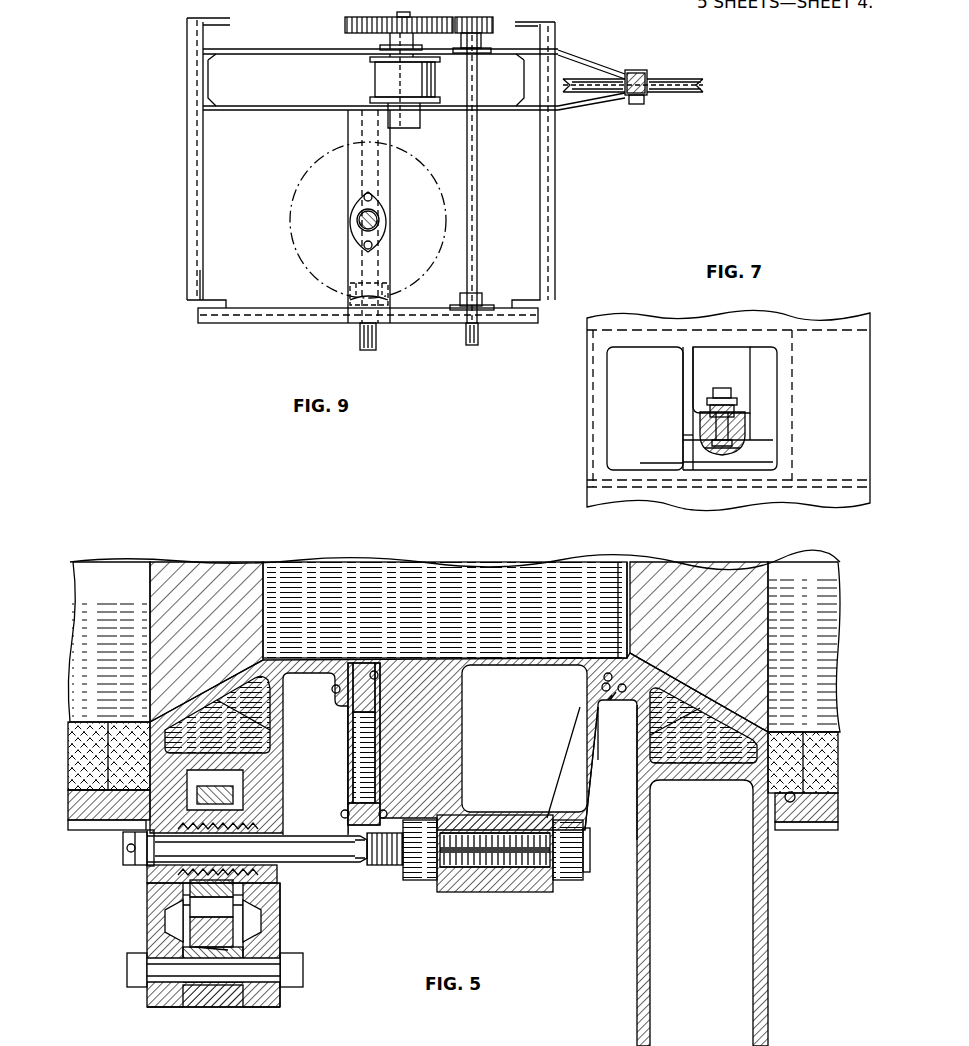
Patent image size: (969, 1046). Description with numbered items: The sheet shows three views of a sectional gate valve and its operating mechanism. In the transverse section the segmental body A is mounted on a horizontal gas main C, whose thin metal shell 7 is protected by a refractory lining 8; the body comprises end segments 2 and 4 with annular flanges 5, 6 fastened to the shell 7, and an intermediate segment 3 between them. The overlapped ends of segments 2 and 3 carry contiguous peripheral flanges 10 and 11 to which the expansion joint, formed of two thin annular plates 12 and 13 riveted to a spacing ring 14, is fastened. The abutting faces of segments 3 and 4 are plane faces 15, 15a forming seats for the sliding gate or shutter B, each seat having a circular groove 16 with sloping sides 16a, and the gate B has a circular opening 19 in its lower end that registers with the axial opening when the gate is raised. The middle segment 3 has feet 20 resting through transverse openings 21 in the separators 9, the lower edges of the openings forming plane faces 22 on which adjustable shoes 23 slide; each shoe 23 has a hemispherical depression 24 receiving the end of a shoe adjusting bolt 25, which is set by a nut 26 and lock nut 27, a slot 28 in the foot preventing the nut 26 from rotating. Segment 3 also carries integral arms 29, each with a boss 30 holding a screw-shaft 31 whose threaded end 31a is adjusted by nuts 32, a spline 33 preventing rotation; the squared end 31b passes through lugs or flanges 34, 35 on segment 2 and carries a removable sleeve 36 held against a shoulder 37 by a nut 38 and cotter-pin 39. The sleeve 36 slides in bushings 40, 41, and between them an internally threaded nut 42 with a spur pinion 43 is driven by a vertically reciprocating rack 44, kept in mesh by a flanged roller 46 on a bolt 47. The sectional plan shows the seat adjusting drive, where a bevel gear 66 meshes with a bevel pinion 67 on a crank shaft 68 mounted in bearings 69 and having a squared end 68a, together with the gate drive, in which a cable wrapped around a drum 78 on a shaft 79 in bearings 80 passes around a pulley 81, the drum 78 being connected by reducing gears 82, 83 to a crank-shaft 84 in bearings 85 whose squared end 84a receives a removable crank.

In FIG. 5, the end segment 2 is at (283, 730).
In FIG. 5, the intermediate segment 3 is at (503, 738).
In FIG. 5, the end segment 4 is at (638, 760).
In FIG. 5, the annular flange 5 is at (110, 812).
In FIG. 5, the annular flange 6 is at (805, 830).
In FIG. 5, the metal shell 7 is at (78, 828).
In FIG. 5, the refractory lining 8 is at (80, 745).
In FIG. 7, the separator 9 is at (583, 408).
In FIG. 5, the peripheral flange 10 is at (334, 697).
In FIG. 5, the peripheral flange 11 is at (382, 694).
In FIG. 5, the annular metal plate 12 is at (348, 766).
In FIG. 5, the annular metal plate 13 is at (380, 758).
In FIG. 5, the spacing ring 14 is at (385, 812).
In FIG. 5, the plane face 15 is at (605, 720).
In FIG. 5, the plane face 15a is at (634, 722).
In FIG. 5, the circular groove 16 is at (600, 690).
In FIG. 5, the sloping side 16a is at (603, 680).
In FIG. 5, the circular opening 19 is at (619, 562).
In FIG. 7, the foot 20 is at (690, 376).
In FIG. 7, the transverse opening 21 is at (615, 427).
In FIG. 7, the plane face 22 is at (652, 462).
In FIG. 7, the adjustable shoe 23 is at (683, 440).
In FIG. 7, the hemispherical depression 24 is at (712, 450).
In FIG. 7, the shoe adjusting bolt 25 is at (733, 387).
In FIG. 7, the nut 26 is at (745, 430).
In FIG. 7, the lock nut 27 is at (735, 408).
In FIG. 7, the slot 28 is at (745, 437).
In FIG. 5, the integral arm 29 is at (570, 785).
In FIG. 5, the boss 30 is at (528, 882).
In FIG. 5, the screw-shaft 31 is at (335, 835).
In FIG. 5, the screw threaded end 31a is at (545, 885).
In FIG. 5, the squared end 31b is at (200, 830).
In FIG. 5, the nut 32 is at (427, 882).
In FIG. 5, the spline 33 is at (497, 850).
In FIG. 5, the lug or flange 34 is at (280, 890).
In FIG. 5, the lug or flange 35 is at (150, 1003).
In FIG. 5, the removable sleeve 36 is at (190, 888).
In FIG. 5, the shoulder 37 is at (340, 866).
In FIG. 5, the nut 38 is at (150, 862).
In FIG. 5, the cotter-pin 39 is at (126, 850).
In FIG. 5, the bushing 40 is at (210, 900).
In FIG. 5, the bushing 41 is at (282, 880).
In FIG. 5, the internally threaded nut 42 is at (228, 895).
In FIG. 5, the spur pinion 43 is at (215, 948).
In FIG. 5, the rack 44 is at (235, 930).
In FIG. 5, the flanged roller 46 is at (225, 1007).
In FIG. 5, the bolt 47 is at (303, 972).
In FIG. 9, the bevel gear 66 is at (293, 251).
In FIG. 9, the bevel pinion 67 is at (385, 288).
In FIG. 9, the crank shaft 68 is at (352, 251).
In FIG. 9, the squared end 68a is at (376, 340).
In FIG. 9, the bearing 69 is at (348, 124).
In FIG. 9, the drum 78 is at (375, 78).
In FIG. 9, the horizontal shaft 79 is at (410, 12).
In FIG. 9, the bearing 80 is at (390, 40).
In FIG. 9, the pulley 81 is at (688, 92).
In FIG. 9, the reducing gear 82 is at (347, 17).
In FIG. 9, the reducing gear 83 is at (493, 30).
In FIG. 9, the crank-shaft 84 is at (478, 197).
In FIG. 9, the overhanging squared end 84a is at (475, 345).
In FIG. 9, the bearing 85 is at (484, 60).
In FIG. 5, the segmental body A is at (445, 610).
In FIG. 5, the sliding gate or shutter B is at (616, 721).
In FIG. 5, the horizontal gas main C is at (454, 647).